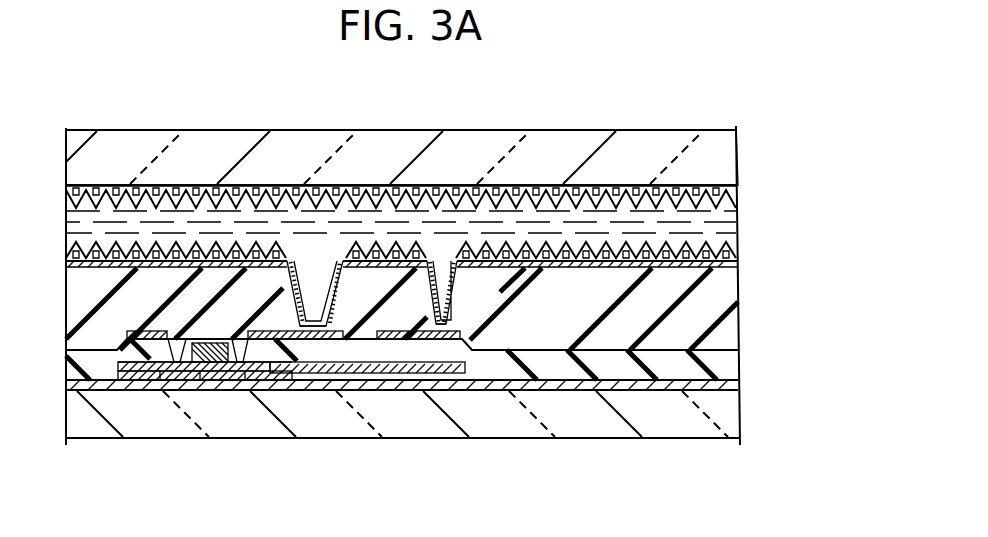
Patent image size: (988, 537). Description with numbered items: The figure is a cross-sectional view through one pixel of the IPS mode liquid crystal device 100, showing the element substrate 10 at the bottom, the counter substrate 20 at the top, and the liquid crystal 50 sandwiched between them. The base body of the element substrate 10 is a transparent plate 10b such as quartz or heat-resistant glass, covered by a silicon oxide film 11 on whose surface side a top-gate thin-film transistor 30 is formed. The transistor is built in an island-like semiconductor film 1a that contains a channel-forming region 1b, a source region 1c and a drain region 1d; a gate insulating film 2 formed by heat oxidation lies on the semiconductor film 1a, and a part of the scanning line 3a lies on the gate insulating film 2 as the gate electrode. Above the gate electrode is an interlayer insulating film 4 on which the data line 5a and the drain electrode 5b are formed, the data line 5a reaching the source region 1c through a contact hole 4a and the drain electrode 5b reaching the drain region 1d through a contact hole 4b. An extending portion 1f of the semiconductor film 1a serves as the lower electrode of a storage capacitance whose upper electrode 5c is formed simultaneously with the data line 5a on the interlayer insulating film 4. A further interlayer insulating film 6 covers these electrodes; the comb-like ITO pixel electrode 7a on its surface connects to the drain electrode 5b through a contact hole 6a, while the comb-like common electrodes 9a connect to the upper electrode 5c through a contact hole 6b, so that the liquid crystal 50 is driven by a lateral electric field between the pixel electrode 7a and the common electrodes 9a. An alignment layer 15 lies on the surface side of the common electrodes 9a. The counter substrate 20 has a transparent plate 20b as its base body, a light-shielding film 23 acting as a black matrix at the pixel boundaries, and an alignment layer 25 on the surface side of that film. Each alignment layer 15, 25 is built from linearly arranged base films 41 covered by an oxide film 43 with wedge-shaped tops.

The liquid crystal device 100 is at (206, 103).
The counter substrate 20 is at (764, 130).
The transparent plate 20b is at (715, 129).
The light-shielding film 23 is at (263, 185).
The alignment layer 25 is at (390, 185).
The alignment layer 15 is at (515, 185).
The liquid crystal 50 is at (764, 200).
The base films 41 is at (585, 262).
The oxide film 43 is at (683, 262).
The pixel electrode 7a is at (352, 277).
The common electrode 9a is at (532, 264).
The interlayer insulating film 6 is at (738, 283).
The contact hole 6a is at (320, 305).
The contact hole 6b is at (447, 280).
The interlayer insulating film 4 is at (738, 357).
The contact hole 4a is at (140, 383).
The contact hole 4b is at (293, 380).
The data line 5a is at (140, 322).
The drain electrode 5b is at (260, 338).
The upper electrode 5c is at (463, 339).
The thin-film transistor 30 is at (170, 334).
The scanning line 3a is at (227, 350).
The gate insulating film 2 is at (188, 390).
The extending portion 1f is at (423, 393).
The semiconductor film 1a is at (228, 402).
The channel-forming region 1b is at (200, 380).
The source region 1c is at (160, 380).
The drain region 1d is at (247, 380).
The silicon oxide film 11 is at (738, 388).
The element substrate 10 is at (795, 268).
The transparent plate 10b is at (683, 423).